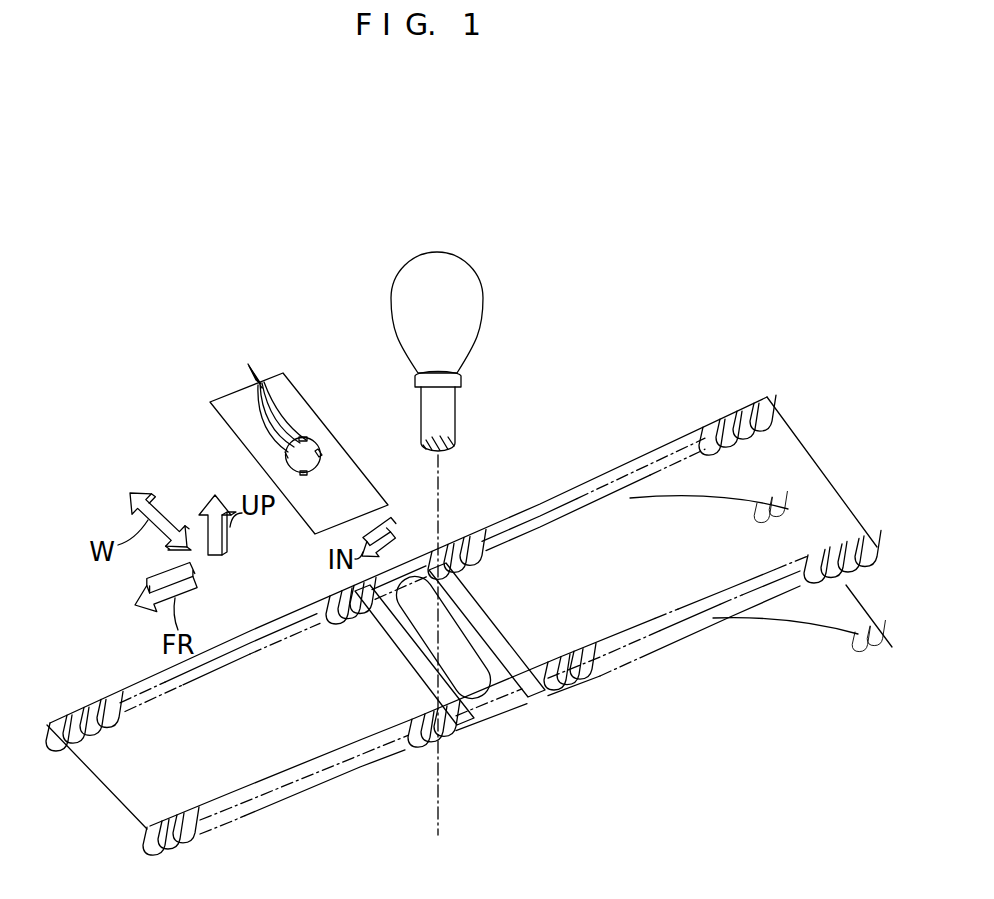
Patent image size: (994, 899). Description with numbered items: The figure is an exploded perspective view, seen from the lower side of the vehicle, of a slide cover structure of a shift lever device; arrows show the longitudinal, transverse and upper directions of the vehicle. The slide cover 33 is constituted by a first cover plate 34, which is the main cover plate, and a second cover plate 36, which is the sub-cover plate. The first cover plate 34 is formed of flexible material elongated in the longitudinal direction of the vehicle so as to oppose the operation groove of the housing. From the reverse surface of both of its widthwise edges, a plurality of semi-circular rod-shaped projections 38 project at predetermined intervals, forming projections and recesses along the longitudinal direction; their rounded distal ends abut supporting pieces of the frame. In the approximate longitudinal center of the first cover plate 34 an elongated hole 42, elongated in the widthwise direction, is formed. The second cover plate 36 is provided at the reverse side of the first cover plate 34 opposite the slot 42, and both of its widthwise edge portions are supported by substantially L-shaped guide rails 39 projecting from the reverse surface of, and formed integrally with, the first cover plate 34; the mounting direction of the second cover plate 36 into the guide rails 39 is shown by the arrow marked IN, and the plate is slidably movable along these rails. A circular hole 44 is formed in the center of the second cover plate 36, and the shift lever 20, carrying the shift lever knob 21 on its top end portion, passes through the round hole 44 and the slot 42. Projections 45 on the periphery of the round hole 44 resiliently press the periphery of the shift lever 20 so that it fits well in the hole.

The shift lever 20 is at (447, 407).
The shift lever knob 21 is at (480, 298).
The slide cover 33 is at (252, 560).
The first cover plate 34 is at (301, 614).
The second cover plate 36 is at (297, 461).
The projections 38 is at (728, 447).
The guide rails 39 is at (425, 568).
The elongated hole 42 is at (497, 668).
The circular hole 44 is at (317, 447).
The projections 45 is at (248, 366).